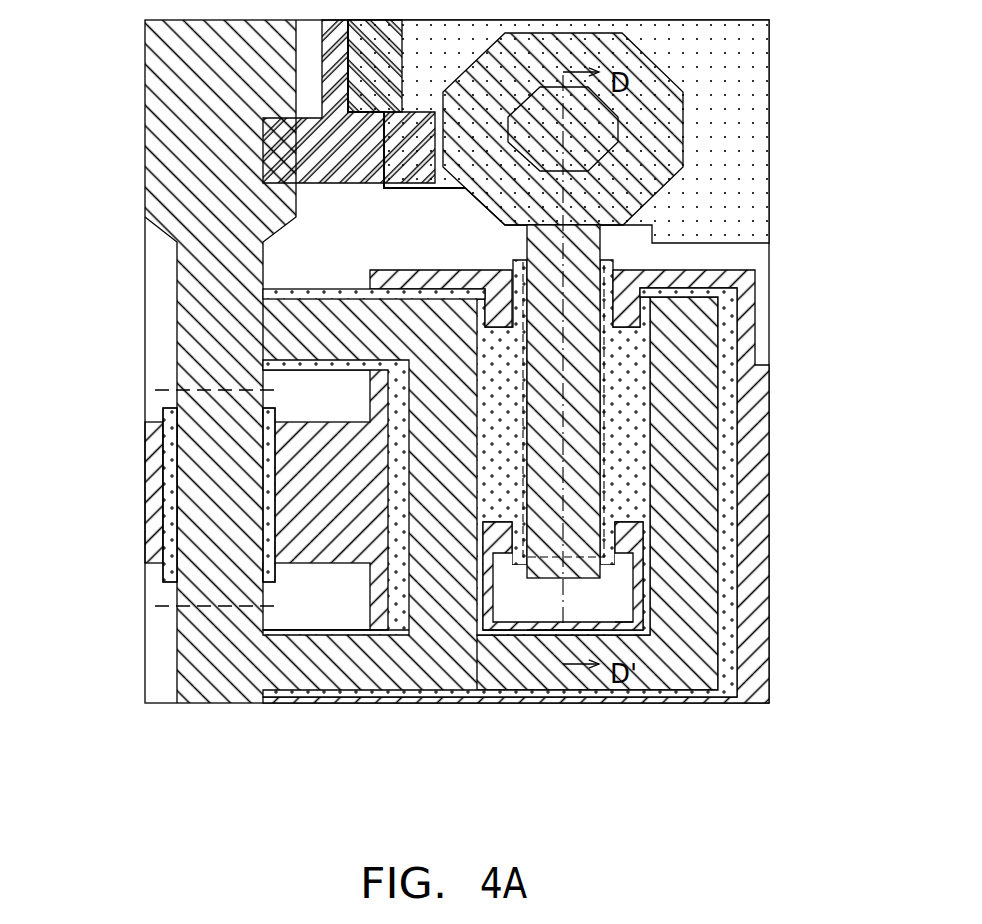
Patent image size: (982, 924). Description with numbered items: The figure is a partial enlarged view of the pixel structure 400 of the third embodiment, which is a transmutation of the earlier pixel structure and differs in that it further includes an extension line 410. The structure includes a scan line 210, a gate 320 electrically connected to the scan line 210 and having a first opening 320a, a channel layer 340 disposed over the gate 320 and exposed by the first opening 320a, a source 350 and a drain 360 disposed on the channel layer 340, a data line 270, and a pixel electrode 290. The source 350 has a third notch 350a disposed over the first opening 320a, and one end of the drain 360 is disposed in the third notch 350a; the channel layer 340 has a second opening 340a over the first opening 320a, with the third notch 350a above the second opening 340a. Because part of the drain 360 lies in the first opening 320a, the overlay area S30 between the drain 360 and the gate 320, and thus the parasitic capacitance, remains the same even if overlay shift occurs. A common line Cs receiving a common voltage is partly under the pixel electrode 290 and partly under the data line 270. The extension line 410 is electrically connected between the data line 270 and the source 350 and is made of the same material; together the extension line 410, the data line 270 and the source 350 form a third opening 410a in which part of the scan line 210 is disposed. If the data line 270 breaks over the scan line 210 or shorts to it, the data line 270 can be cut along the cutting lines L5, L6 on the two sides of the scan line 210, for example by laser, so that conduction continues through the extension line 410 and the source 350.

The pixel structure 400 is at (790, 868).
The data line 270 is at (163, 200).
The pixel electrode 290 is at (772, 106).
The common line Cs is at (340, 172).
The drain 360 is at (578, 383).
The extension line 410 is at (380, 340).
The third opening 410a is at (343, 613).
The cutting line L5 is at (238, 393).
The cutting line L6 is at (240, 613).
The scan line 210 is at (147, 471).
The source 350 is at (680, 460).
The channel layer 340 is at (620, 505).
The gate 320 is at (770, 657).
The overlay area S30 is at (735, 608).
The third notch 350a is at (498, 637).
The second opening 340a is at (547, 633).
The first opening 320a is at (628, 623).